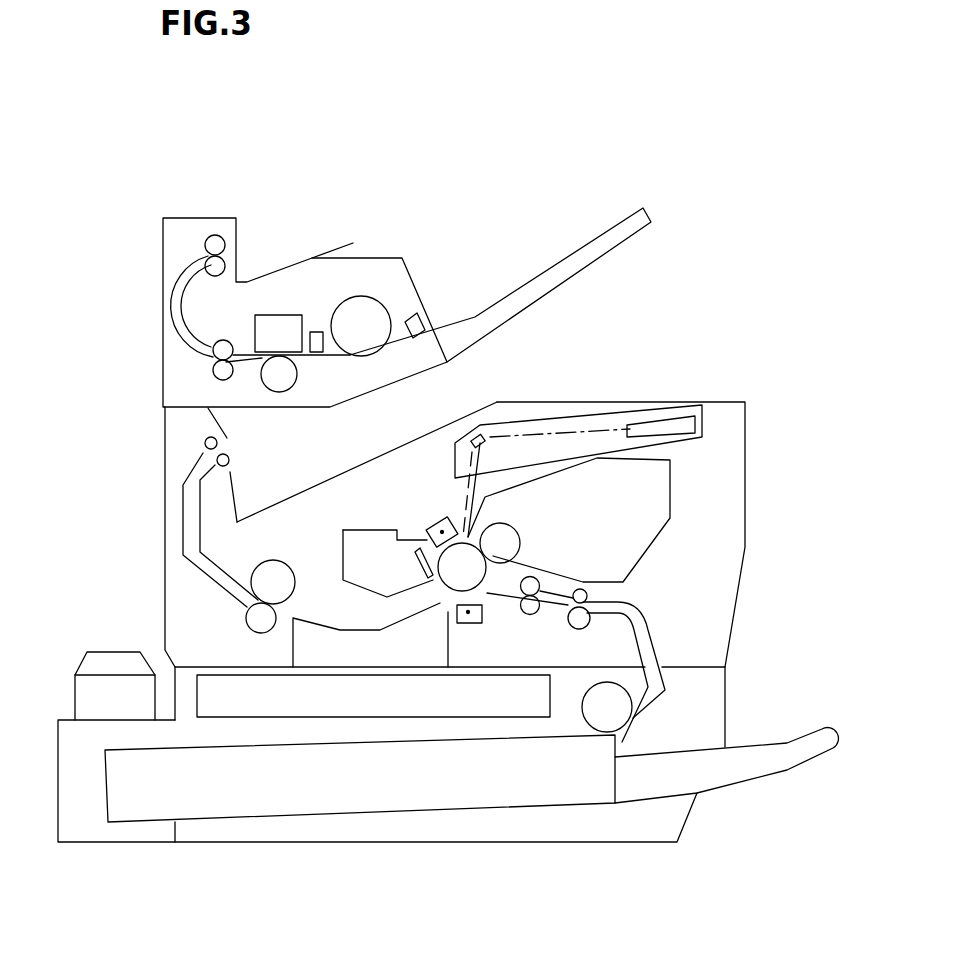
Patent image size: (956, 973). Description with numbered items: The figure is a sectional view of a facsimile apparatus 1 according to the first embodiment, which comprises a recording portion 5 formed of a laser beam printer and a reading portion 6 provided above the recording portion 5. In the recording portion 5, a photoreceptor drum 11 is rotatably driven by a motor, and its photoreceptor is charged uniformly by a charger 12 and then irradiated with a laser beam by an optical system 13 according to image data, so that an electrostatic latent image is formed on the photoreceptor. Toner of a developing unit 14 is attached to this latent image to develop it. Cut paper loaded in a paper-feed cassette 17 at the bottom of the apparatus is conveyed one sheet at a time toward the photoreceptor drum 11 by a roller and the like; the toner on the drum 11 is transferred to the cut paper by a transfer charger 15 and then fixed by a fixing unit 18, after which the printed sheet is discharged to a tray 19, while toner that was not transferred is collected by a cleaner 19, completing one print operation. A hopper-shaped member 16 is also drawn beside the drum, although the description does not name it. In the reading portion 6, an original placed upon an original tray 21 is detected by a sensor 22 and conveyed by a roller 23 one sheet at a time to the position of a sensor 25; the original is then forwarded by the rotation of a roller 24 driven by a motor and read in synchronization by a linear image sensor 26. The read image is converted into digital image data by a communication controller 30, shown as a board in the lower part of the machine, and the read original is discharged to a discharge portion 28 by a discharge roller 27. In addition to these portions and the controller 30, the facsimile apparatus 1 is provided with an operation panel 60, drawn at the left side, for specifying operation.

The facsimile apparatus 1 is at (60, 164).
The recording portion 5 is at (155, 494).
The reading portion 6 is at (155, 310).
The photoreceptor drum 11 is at (460, 581).
The charger 12 is at (430, 517).
The optical system 13 is at (597, 400).
The developing unit 14 is at (660, 528).
The transfer charger 15 is at (476, 622).
The toner hopper 16 is at (364, 578).
The paper-feed cassette 17 is at (484, 798).
The fixing unit 18 is at (283, 559).
The tray 19 is at (340, 472).
The original tray 21 is at (567, 252).
The sensor 22 is at (415, 312).
The roller 23 is at (368, 297).
The roller 24 is at (297, 374).
The sensor 25 is at (320, 332).
The linear image sensor 26 is at (290, 325).
The discharge roller 27 is at (213, 234).
The discharge portion 28 is at (340, 238).
The communication controller 30 is at (315, 712).
The operation panel 60 is at (75, 675).